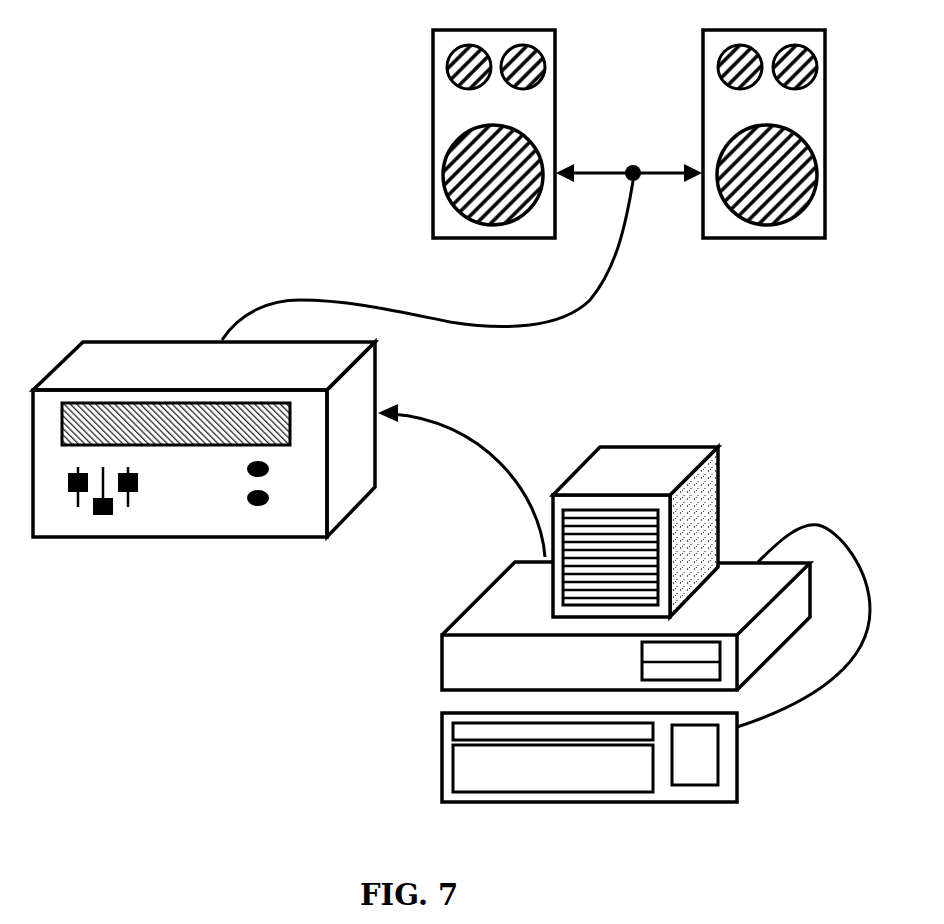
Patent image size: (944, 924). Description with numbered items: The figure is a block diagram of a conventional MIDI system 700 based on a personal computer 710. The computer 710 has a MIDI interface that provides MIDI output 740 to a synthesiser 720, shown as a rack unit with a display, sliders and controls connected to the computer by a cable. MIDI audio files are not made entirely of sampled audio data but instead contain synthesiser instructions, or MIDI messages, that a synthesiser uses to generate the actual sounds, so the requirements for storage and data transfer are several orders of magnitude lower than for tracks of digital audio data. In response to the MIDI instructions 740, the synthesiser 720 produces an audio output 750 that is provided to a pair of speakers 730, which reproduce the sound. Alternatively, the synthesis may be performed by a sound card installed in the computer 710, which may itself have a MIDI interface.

The MIDI system 700 is at (214, 167).
The personal computer 710 is at (755, 510).
The synthesiser 720 is at (105, 339).
The speakers 730 is at (386, 140).
The MIDI output 740 is at (494, 470).
The audio output 750 is at (427, 260).